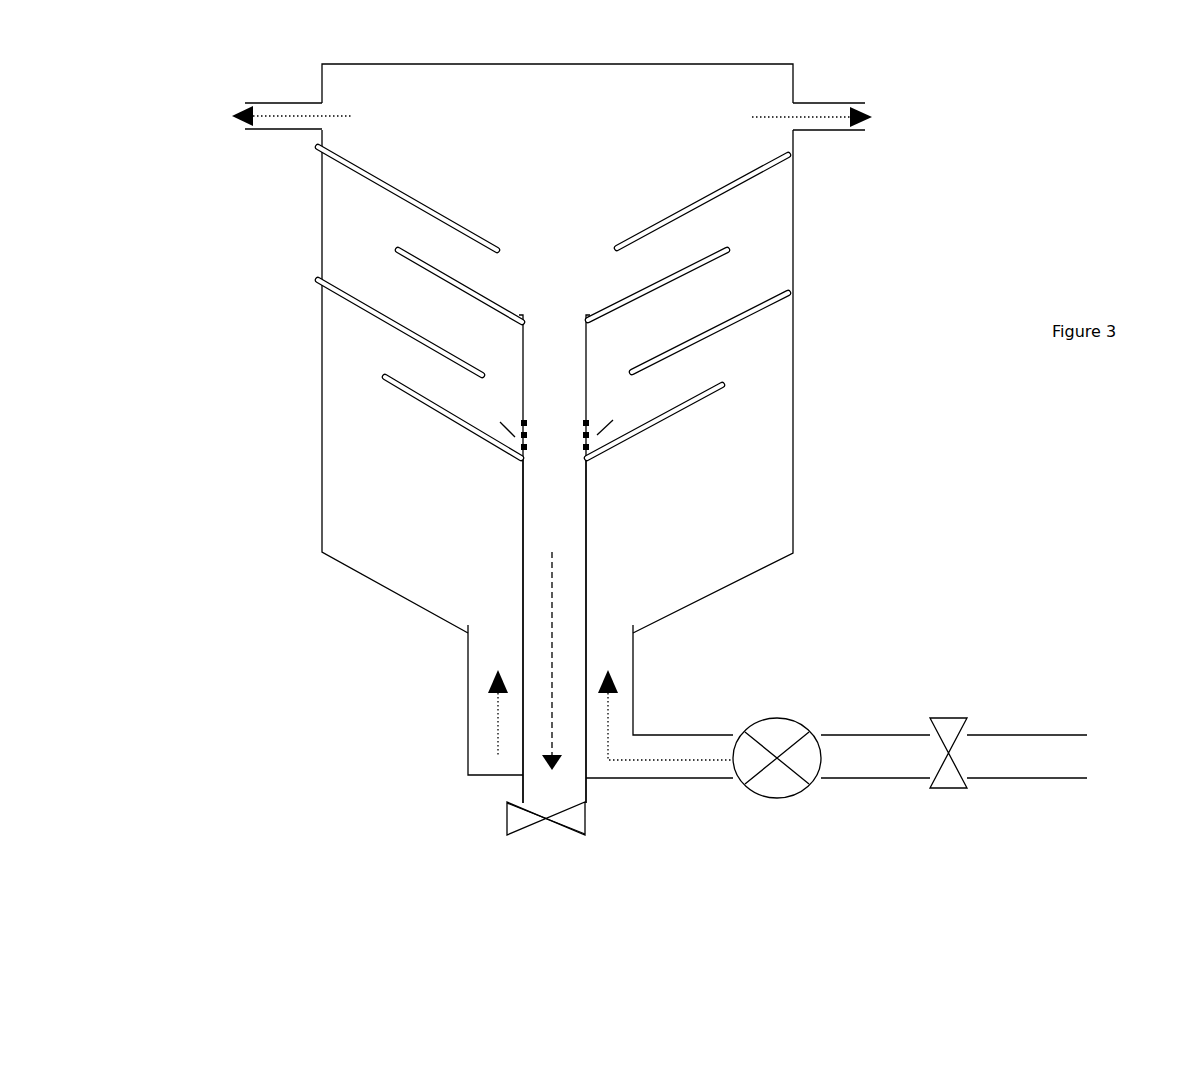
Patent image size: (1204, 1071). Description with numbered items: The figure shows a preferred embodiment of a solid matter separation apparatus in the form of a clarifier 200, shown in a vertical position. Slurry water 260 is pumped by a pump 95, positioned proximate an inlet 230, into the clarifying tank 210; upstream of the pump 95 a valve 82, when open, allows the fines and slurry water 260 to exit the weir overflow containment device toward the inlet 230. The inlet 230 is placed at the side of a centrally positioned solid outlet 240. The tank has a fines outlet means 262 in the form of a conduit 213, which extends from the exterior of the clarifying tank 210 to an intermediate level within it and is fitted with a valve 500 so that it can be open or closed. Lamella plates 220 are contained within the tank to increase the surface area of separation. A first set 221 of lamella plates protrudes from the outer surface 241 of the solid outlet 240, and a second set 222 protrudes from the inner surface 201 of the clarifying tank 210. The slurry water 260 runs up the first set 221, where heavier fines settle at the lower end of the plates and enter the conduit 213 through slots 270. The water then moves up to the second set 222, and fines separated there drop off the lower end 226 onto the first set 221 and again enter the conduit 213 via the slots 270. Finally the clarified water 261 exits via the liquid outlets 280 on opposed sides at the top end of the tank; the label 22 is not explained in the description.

The clarifier 200 is at (838, 552).
The inner surface 201 is at (322, 263).
The clarifying tank 210 is at (316, 461).
The conduit 213 is at (554, 540).
The lamella plates 220 is at (718, 208).
The first set of lamella plates 221 is at (465, 433).
The second set of lamella plates 222 is at (402, 335).
The lower end of the second set of lamella plates 226 is at (483, 362).
The baffle region 22 is at (552, 423).
The slots 270 is at (580, 435).
The outer surface 241 is at (520, 488).
The fines outlet means 262 is at (558, 650).
The slurry water 260 is at (605, 702).
The clarified water 261 is at (560, 103).
The liquid outlet 280 is at (574, 105).
The solid outlet 240 is at (546, 837).
The valve 500 is at (505, 818).
The inlet 230 is at (887, 736).
The pump 95 is at (790, 715).
The valve 82 is at (960, 712).